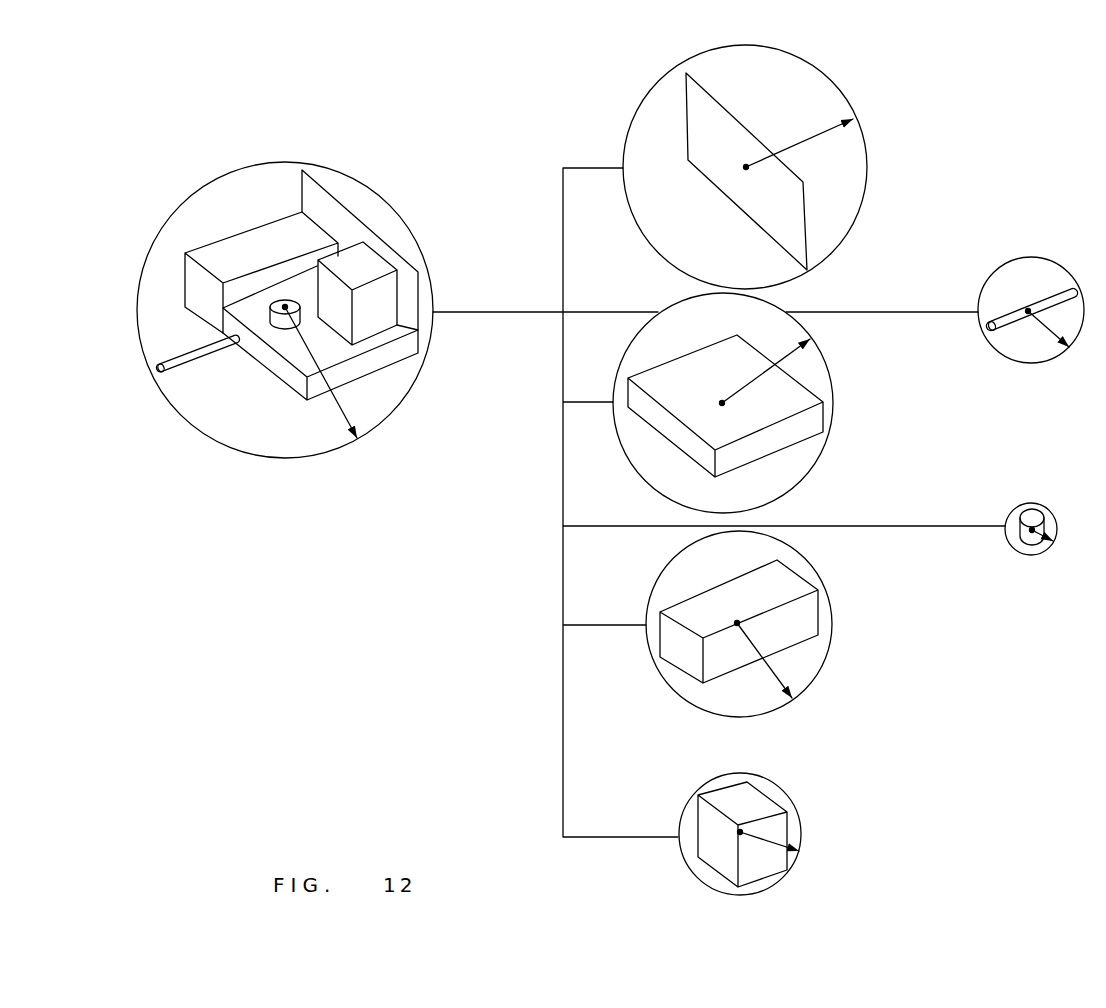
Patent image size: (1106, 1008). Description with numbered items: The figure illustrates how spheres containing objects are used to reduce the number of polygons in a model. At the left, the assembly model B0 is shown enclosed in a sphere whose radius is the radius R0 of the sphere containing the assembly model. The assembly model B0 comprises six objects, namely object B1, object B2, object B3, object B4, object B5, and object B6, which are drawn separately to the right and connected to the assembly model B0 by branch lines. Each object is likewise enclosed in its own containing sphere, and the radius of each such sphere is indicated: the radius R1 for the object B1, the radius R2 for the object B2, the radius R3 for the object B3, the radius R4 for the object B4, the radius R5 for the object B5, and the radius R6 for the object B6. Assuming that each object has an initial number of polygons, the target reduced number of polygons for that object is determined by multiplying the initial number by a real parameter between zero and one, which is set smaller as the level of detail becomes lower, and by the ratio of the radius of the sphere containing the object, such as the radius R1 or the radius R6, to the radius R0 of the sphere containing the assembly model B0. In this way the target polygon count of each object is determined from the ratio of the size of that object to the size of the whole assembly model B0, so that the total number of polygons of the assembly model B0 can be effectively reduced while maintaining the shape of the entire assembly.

The assembly model B0 is at (247, 231).
The radius of the sphere containing the assembly model R0 is at (320, 372).
The object B1 is at (687, 137).
The radius of the sphere containing the object R1 is at (799, 139).
The object B2 is at (695, 351).
The radius of the sphere containing the object R2 is at (765, 367).
The object B3 is at (727, 582).
The radius of the sphere containing the object R3 is at (764, 660).
The object B4 is at (705, 863).
The radius of the sphere containing the object R4 is at (769, 849).
The object B5 is at (1018, 310).
The radius of the sphere containing the object R5 is at (1043, 331).
The object B6 is at (1018, 545).
The radius of the sphere containing the object R6 is at (1057, 545).